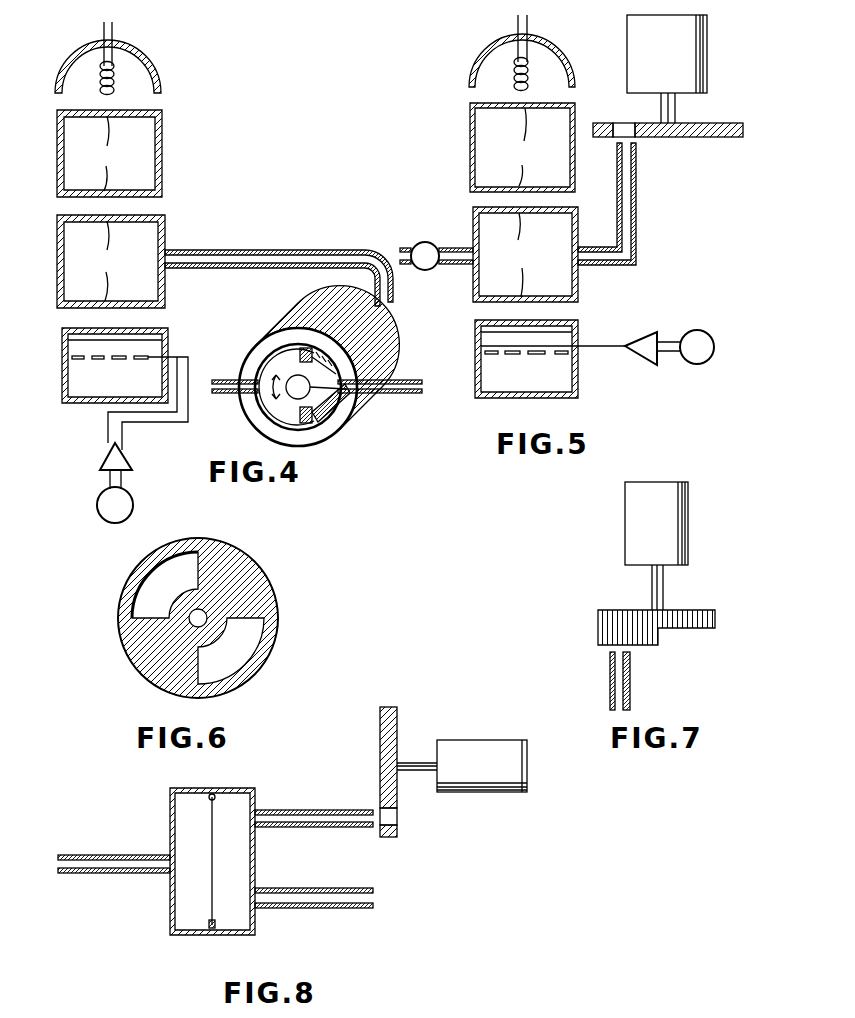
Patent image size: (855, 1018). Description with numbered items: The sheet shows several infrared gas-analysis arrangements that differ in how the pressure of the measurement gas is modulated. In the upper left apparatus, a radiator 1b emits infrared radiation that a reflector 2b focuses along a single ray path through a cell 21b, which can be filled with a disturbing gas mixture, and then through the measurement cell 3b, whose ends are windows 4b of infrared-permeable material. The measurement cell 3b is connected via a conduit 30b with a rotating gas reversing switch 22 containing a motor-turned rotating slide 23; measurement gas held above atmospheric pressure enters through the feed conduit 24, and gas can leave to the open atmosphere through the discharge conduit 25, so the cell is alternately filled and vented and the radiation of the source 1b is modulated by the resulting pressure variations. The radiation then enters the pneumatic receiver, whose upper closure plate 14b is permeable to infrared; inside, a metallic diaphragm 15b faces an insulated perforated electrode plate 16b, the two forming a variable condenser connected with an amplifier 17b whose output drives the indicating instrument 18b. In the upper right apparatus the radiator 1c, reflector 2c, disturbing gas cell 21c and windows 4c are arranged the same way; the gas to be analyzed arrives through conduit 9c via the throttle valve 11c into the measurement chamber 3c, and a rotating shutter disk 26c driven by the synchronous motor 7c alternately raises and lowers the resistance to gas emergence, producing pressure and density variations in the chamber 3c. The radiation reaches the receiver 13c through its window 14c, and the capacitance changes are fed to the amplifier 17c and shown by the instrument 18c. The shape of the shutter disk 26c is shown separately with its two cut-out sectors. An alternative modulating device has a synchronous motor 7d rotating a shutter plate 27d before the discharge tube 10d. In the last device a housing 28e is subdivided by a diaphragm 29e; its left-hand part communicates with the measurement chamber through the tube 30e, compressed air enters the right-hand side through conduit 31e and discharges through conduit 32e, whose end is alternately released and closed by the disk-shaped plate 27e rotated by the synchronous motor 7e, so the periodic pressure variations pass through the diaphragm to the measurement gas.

In FIG. 4, the radiator 1b is at (110, 62).
In FIG. 4, the reflector 2b is at (161, 79).
In FIG. 4, the disturbing gas cell 21b is at (147, 153).
In FIG. 4, the windows 4b is at (110, 208).
In FIG. 4, the measurement cell 3b is at (150, 235).
In FIG. 4, the conduit 30b is at (327, 245).
In FIG. 4, the rotating gas reversing switch 22 is at (393, 334).
In FIG. 4, the rotor 23 is at (272, 407).
In FIG. 4, the gas feed conduit 24 is at (392, 394).
In FIG. 4, the gas discharge conduit 25 is at (226, 394).
In FIG. 4, the closure plate 14b is at (102, 329).
In FIG. 4, the diaphragm 15b is at (146, 349).
In FIG. 4, the perforated electrode plate 16b is at (122, 361).
In FIG. 4, the amplifier 17b is at (131, 463).
In FIG. 4, the voltmeter or ammeter 18b is at (132, 502).
In FIG. 5, the radiator 1c is at (524, 60).
In FIG. 5, the reflector 2c is at (566, 70).
In FIG. 5, the disturbing gas cell 21c is at (482, 133).
In FIG. 5, the windows 4c is at (523, 202).
In FIG. 5, the synchronous motor 7c is at (698, 62).
In FIG. 5, the rotating shutter disk 26c is at (720, 138).
In FIG. 6, the rotating shutter disk 26c is at (257, 578).
In FIG. 5, the conduit 9c is at (453, 248).
In FIG. 5, the throttle valve 11c is at (422, 243).
In FIG. 5, the measurement chamber 3c is at (560, 236).
In FIG. 5, the closure plate 14c is at (556, 321).
In FIG. 5, the radiation receiver 13c is at (567, 375).
In FIG. 5, the amplifier 17c is at (637, 333).
In FIG. 5, the voltmeter or ammeter 18c is at (701, 327).
In FIG. 7, the synchronous motor 7d is at (678, 528).
In FIG. 7, the shutter plate 27d is at (695, 612).
In FIG. 7, the gas discharge conduit 10d is at (630, 688).
In FIG. 8, the housing 28e is at (242, 933).
In FIG. 8, the diaphragm 29e is at (210, 906).
In FIG. 8, the tube 30e is at (123, 873).
In FIG. 8, the conduit 31e is at (295, 897).
In FIG. 8, the conduit 32e is at (315, 806).
In FIG. 8, the disk-shaped plate 27e is at (397, 731).
In FIG. 8, the synchronous motor 7e is at (499, 795).